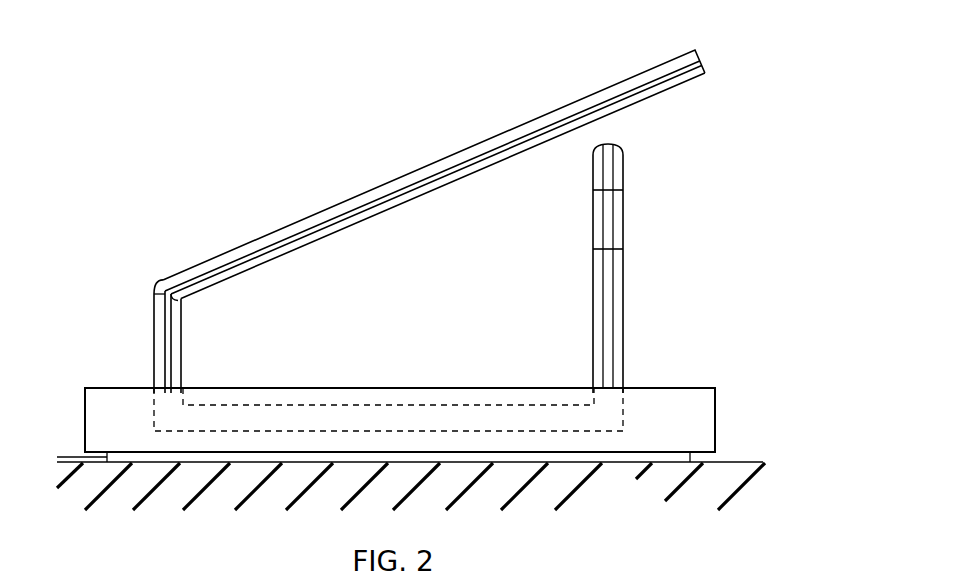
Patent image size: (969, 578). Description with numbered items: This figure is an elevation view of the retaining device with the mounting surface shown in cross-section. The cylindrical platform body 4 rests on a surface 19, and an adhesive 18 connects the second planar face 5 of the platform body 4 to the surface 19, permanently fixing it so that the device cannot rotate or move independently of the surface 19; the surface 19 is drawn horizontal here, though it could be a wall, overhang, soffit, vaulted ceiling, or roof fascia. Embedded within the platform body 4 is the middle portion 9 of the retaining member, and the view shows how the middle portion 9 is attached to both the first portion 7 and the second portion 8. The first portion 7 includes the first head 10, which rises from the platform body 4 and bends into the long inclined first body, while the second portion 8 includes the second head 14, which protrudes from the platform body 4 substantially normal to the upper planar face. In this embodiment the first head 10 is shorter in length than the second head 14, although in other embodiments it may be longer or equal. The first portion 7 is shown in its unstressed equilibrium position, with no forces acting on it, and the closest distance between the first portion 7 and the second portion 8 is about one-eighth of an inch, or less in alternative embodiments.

The platform body 4 is at (692, 427).
The second planar face 5 is at (718, 457).
The first portion 7 is at (317, 138).
The second portion 8 is at (721, 214).
The middle portion 9 is at (417, 405).
The first head 10 is at (160, 337).
The second head 14 is at (623, 318).
The adhesive 18 is at (75, 456).
The surface 19 is at (657, 503).